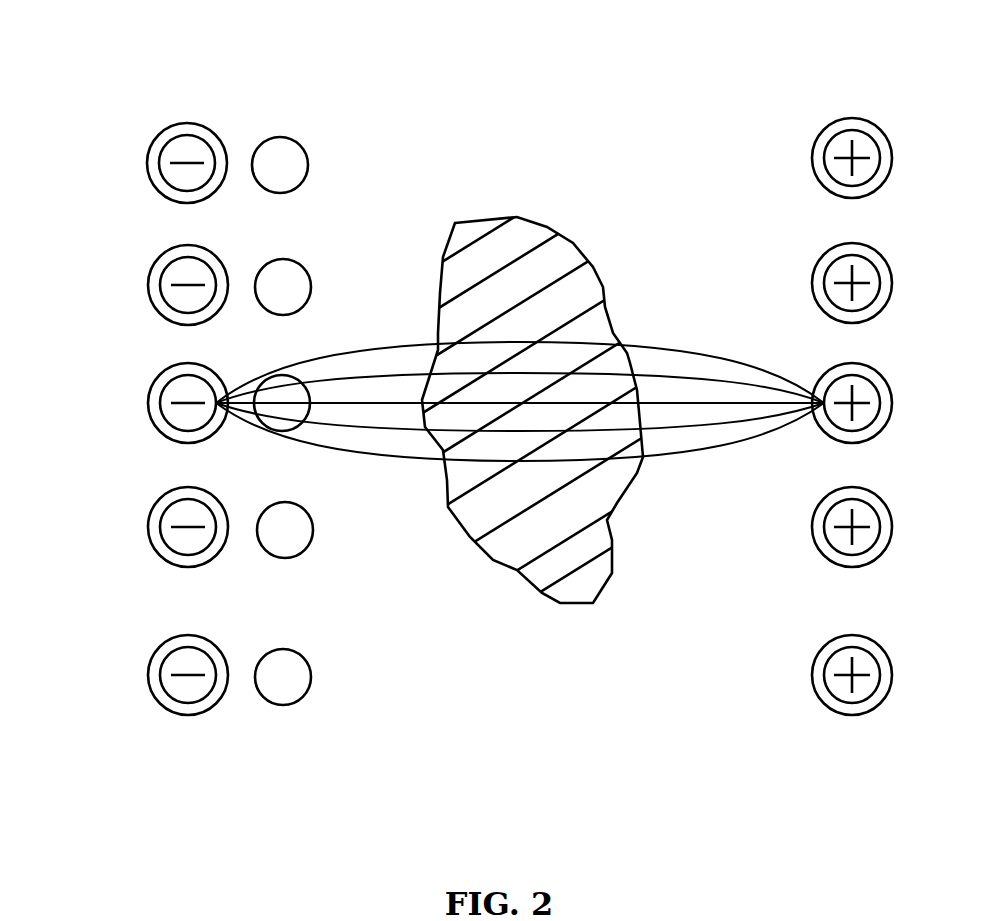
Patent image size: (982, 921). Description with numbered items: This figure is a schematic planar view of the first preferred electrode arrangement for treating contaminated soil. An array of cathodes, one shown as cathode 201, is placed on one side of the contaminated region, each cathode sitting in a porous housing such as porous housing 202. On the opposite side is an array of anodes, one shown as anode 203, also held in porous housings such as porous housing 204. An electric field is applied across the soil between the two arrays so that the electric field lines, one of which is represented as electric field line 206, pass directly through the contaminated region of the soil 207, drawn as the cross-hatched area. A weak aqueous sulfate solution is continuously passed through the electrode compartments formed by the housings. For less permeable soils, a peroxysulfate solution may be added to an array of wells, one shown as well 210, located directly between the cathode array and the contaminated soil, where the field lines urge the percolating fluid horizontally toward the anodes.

The cathode 201 is at (158, 163).
The porous housing 202 is at (198, 123).
The anode 203 is at (824, 158).
The porous housing 204 is at (852, 118).
The electric field line 206 is at (395, 457).
The contaminated region of the soil 207 is at (490, 217).
The well 210 is at (292, 137).